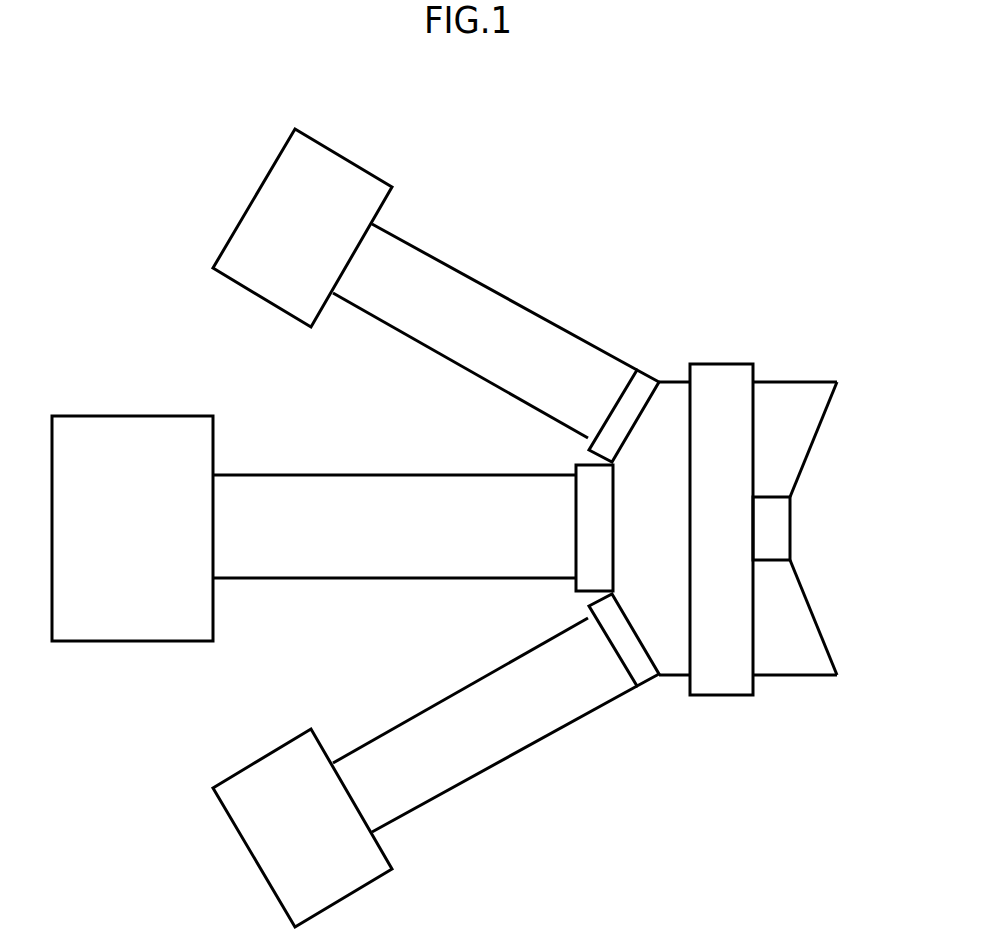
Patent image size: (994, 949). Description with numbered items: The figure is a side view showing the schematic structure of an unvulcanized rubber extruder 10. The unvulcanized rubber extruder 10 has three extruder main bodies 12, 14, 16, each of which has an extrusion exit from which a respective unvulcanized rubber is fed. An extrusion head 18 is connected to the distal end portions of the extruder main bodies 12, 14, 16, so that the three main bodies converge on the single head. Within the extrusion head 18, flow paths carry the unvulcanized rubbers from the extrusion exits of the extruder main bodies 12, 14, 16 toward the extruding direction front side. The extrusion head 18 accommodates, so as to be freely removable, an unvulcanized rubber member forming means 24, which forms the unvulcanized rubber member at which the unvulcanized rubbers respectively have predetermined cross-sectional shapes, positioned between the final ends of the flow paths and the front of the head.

The unvulcanized rubber extruder 10 is at (590, 169).
The extruder main body 12 is at (360, 163).
The extruder main body 14 is at (178, 416).
The extruder main body 16 is at (283, 742).
The extrusion head 18 is at (723, 364).
The unvulcanized rubber member forming means 24 is at (792, 525).